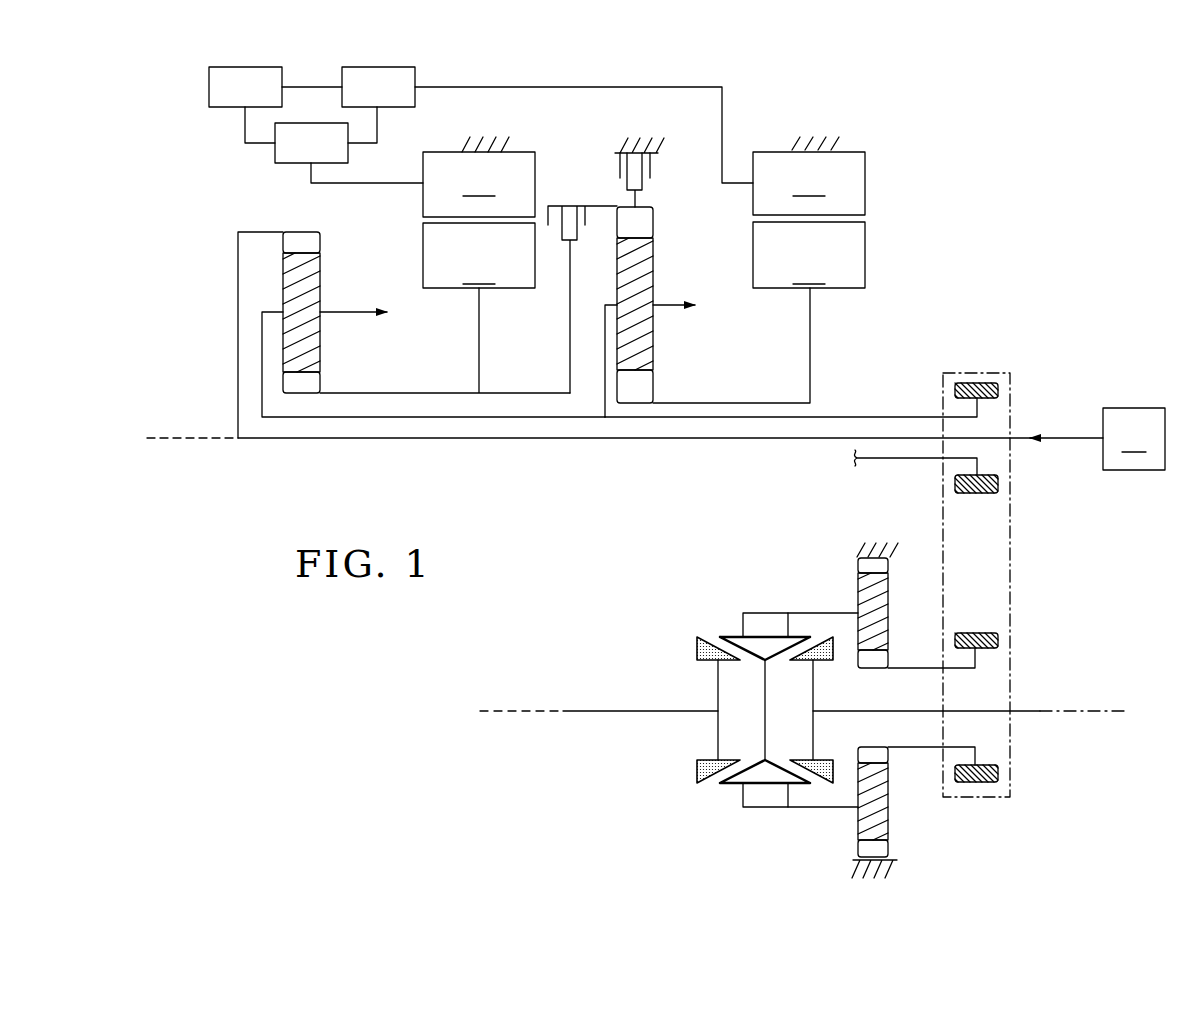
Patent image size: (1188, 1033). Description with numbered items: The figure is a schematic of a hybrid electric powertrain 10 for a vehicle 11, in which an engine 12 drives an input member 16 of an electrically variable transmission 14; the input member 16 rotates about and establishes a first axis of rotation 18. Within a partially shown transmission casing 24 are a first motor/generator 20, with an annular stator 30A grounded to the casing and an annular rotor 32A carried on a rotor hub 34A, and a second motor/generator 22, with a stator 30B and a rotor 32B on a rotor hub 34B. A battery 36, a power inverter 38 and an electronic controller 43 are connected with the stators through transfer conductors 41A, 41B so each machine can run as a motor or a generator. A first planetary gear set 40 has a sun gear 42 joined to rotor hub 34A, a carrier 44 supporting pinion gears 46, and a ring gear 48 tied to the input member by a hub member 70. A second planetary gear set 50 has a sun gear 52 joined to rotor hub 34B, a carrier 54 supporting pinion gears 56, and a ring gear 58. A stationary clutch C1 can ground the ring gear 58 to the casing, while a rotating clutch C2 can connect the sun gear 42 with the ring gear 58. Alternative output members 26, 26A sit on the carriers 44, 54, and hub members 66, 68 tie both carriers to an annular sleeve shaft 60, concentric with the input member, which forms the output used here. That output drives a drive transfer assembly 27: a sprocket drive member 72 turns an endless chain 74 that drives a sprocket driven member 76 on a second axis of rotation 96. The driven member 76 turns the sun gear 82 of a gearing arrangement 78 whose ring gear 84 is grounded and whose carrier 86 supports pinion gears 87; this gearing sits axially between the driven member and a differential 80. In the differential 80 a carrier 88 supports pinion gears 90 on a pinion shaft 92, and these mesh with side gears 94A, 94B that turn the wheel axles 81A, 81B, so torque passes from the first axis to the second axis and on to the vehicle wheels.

The powertrain 10 is at (973, 168).
The vehicle 11 is at (936, 95).
The engine 12 is at (1134, 439).
The electrically variable transmission 14 is at (220, 145).
The input member 16 is at (730, 440).
The axis of rotation 18 is at (190, 438).
The first motor/generator 20 is at (412, 216).
The second motor/generator 22 is at (893, 222).
The transmission casing 24 is at (503, 142).
The transmission output member 26 is at (333, 310).
The alternate transmission output member 26A is at (672, 305).
The drive transfer assembly 27 is at (1072, 582).
The annular stator 30A is at (479, 184).
The annular stator 30B is at (809, 183).
The annular rotor 32A is at (479, 255).
The annular rotor 32B is at (809, 255).
The rotor hub 34A is at (479, 358).
The rotor hub 34B is at (810, 362).
The battery 36 is at (245, 67).
The power inverter 38 is at (295, 165).
The first planetary gear set 40 is at (390, 353).
The transfer conductor 41A is at (385, 182).
The transfer conductor 41B is at (572, 87).
The sun gear 42 is at (320, 383).
The electronic controller 43 is at (377, 67).
The carrier 44 is at (280, 310).
The pinion gears 46 is at (320, 355).
The ring gear 48 is at (320, 240).
The second planetary gear set 50 is at (692, 348).
The sun gear 52 is at (653, 390).
The carrier 54 is at (616, 300).
The pinion gears 56 is at (655, 268).
The ring gear 58 is at (655, 222).
The annular sleeve shaft 60 is at (530, 418).
The hub member 66 is at (262, 383).
The hub member 68 is at (605, 363).
The hub member 70 is at (238, 328).
The drive member 72 is at (977, 383).
The endless chain 74 is at (1012, 513).
The driven member 76 is at (977, 633).
The gearing arrangement 78 is at (842, 586).
The differential 80 is at (690, 592).
The wheel axle 81A is at (612, 711).
The wheel axle 81B is at (1037, 711).
The sun gear 82 is at (888, 660).
The ring gear 84 is at (888, 565).
The carrier 86 is at (827, 613).
The pinion gears 87 is at (888, 612).
The carrier 88 is at (742, 627).
The pinion gears 90 is at (735, 635).
The pinion shaft 92 is at (763, 713).
The side gear 94A is at (697, 650).
The side gear 94B is at (833, 660).
The second axis of rotation 96 is at (503, 711).
The stationary-type clutch C1 is at (655, 165).
The rotating-type clutch C2 is at (546, 214).